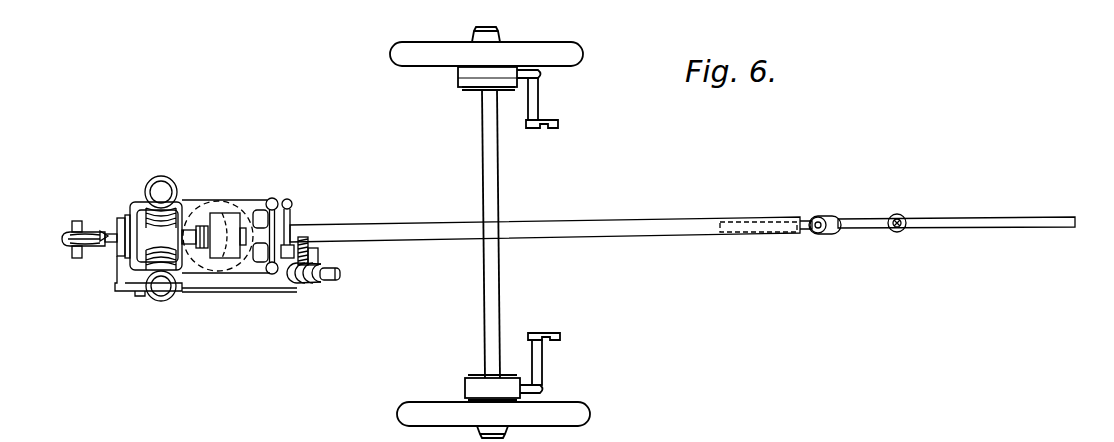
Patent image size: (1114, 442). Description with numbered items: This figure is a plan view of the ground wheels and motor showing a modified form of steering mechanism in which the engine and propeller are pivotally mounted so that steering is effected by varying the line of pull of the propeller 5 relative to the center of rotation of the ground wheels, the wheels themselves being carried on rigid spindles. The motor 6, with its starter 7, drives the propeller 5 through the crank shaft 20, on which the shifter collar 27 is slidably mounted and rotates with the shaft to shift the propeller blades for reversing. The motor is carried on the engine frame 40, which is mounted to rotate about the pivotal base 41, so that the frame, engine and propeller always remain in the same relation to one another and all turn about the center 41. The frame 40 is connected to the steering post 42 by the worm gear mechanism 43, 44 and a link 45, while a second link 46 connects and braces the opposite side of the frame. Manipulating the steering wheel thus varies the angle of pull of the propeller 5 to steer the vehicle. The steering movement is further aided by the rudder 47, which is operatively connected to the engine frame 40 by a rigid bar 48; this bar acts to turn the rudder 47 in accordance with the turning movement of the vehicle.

The propeller 5 is at (74, 240).
The motor 6 is at (161, 295).
The starter 7 is at (232, 258).
The crank shaft 20 is at (103, 232).
The shifter collar 27 is at (119, 228).
The engine frame 40 is at (228, 202).
The pivotal base 41 is at (193, 205).
The steering post 42 is at (334, 270).
The worm gear mechanism 43 is at (316, 266).
The worm gear mechanism 44 is at (303, 240).
The link 45 is at (291, 212).
The second link 46 is at (280, 200).
The rudder 47 is at (956, 219).
The rigid bar 48 is at (641, 223).